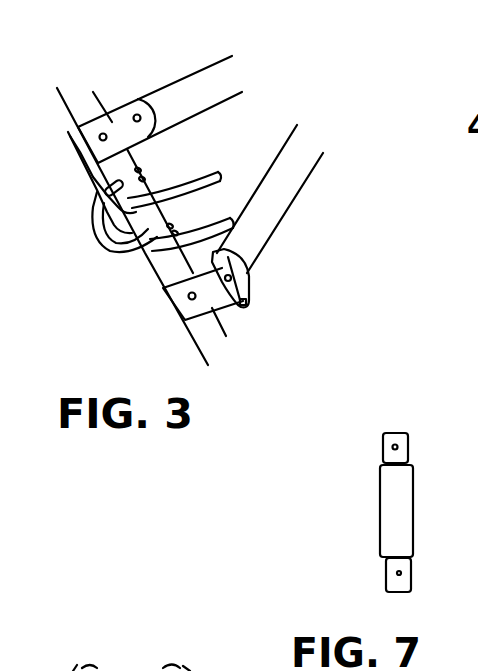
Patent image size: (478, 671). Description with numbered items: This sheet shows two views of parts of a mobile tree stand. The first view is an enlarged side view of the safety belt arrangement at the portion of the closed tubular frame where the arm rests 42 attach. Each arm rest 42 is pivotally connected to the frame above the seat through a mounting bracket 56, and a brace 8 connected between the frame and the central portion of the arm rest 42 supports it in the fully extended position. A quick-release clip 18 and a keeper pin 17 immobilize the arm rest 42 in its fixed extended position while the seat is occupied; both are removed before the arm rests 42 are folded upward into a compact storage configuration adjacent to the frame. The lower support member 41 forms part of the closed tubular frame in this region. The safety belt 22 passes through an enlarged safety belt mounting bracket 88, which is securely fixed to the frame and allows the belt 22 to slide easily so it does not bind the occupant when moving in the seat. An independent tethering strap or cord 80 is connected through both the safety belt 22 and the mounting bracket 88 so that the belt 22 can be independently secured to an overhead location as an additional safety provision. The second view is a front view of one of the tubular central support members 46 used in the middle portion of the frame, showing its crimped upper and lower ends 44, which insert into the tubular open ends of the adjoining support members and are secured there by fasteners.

In FIG. 3, the brace 8 is at (278, 205).
In FIG. 3, the keeper pin 17 is at (250, 278).
In FIG. 3, the quick-release clip 18 is at (256, 304).
In FIG. 3, the safety belt 22 is at (193, 178).
In FIG. 3, the lower support member 41 is at (168, 275).
In FIG. 3, the arm rest 42 is at (175, 95).
In FIG. 7, the crimped end 44 is at (388, 448).
In FIG. 7, the tubular central support member 46 is at (388, 507).
In FIG. 3, the mounting bracket 56 is at (112, 123).
In FIG. 3, the tethering strap or cord 80 is at (88, 197).
In FIG. 3, the enlarged bracket 88 is at (110, 257).